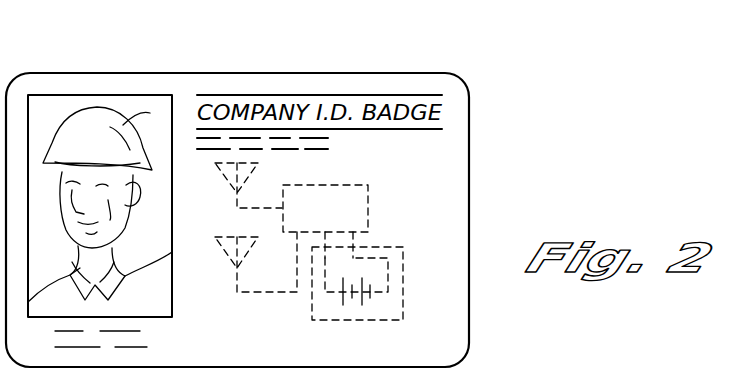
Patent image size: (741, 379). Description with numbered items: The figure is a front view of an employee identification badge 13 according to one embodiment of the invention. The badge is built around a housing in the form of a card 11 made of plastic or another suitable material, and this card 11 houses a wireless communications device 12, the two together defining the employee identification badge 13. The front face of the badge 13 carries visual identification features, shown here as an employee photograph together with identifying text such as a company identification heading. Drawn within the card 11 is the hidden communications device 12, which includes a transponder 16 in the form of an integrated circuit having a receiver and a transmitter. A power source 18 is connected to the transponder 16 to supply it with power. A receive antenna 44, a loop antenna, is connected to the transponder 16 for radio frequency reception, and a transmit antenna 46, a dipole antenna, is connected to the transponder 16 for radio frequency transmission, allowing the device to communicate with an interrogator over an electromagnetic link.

The card 11 is at (433, 318).
The wireless communications device 12 is at (361, 238).
The employee identification badge 13 is at (436, 52).
The transponder 16 is at (368, 208).
The power source 18 is at (403, 280).
The receive antenna 44 is at (224, 171).
The transmit antenna 46 is at (225, 255).